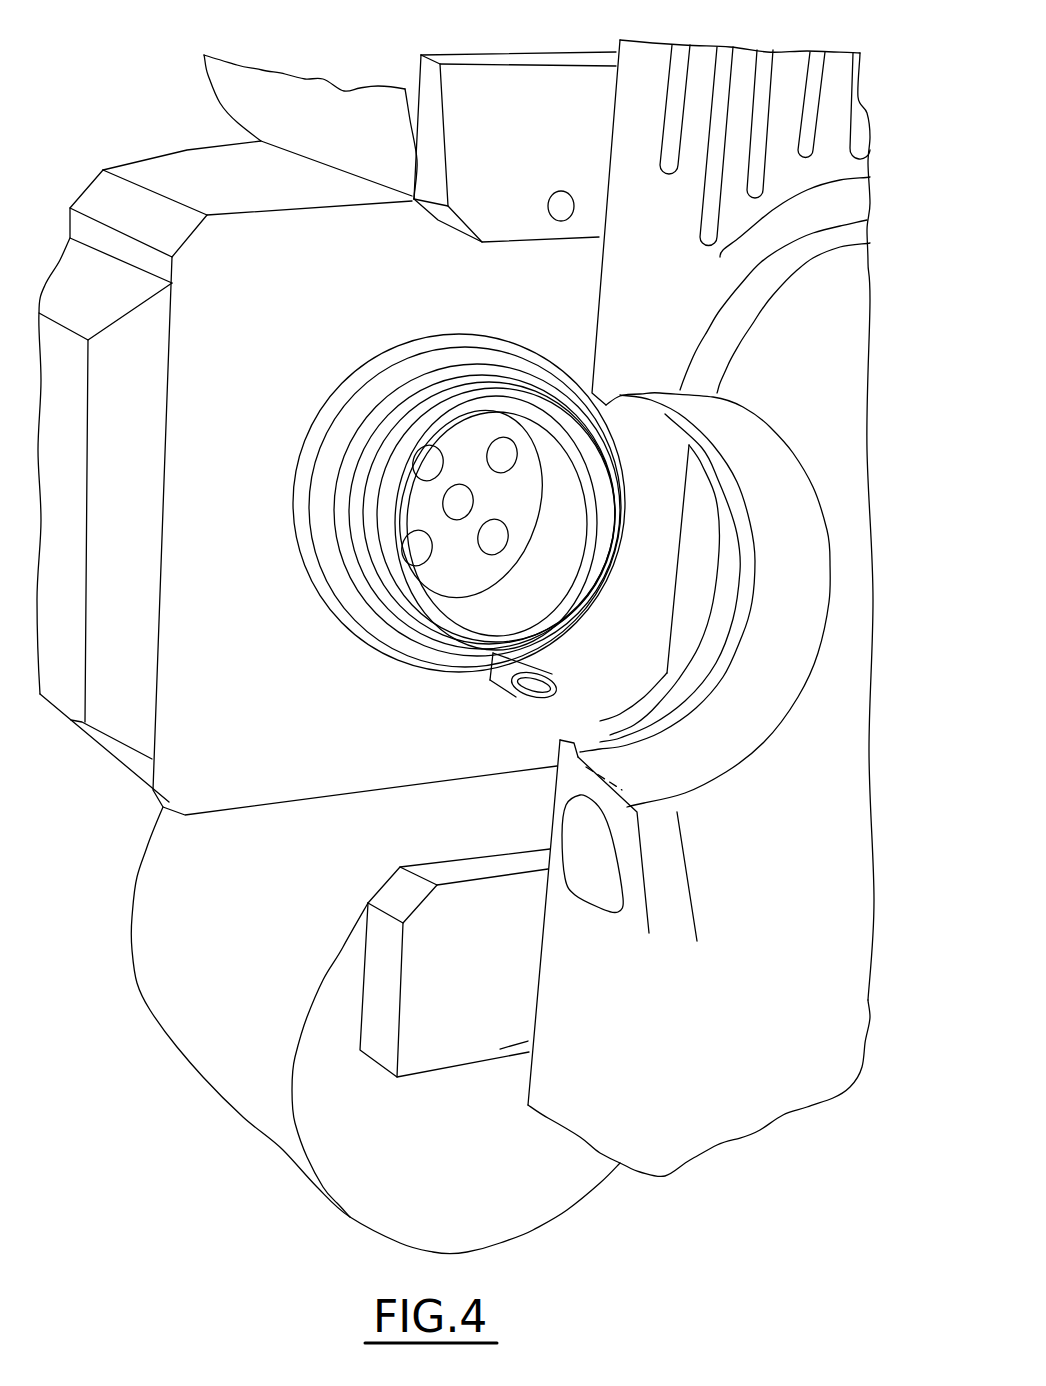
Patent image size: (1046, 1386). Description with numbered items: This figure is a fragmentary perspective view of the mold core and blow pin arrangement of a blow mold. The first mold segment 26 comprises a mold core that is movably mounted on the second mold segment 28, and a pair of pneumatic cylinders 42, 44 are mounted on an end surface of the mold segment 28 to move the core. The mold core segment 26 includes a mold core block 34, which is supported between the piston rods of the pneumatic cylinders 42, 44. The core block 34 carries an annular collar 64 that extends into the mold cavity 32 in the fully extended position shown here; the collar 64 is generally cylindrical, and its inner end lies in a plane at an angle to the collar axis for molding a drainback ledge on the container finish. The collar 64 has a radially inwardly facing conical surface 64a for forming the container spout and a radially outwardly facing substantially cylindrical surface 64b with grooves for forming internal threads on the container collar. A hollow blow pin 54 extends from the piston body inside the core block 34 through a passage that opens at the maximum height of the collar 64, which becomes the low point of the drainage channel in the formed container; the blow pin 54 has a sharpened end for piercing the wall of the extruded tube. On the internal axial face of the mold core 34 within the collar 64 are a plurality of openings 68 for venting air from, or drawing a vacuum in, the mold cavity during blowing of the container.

The first mold segment 26 is at (182, 147).
The second mold segment 28 is at (783, 50).
The mold cavity 32 is at (798, 267).
The mold core block 34 is at (187, 375).
The pneumatic cylinder 42 is at (234, 88).
The pneumatic cylinder 44 is at (223, 1077).
The blow pin 54 is at (500, 680).
The annular collar 64 is at (408, 630).
The conical surface 64a is at (542, 597).
The cylindrical surface 64b is at (390, 434).
The openings 68 is at (432, 481).